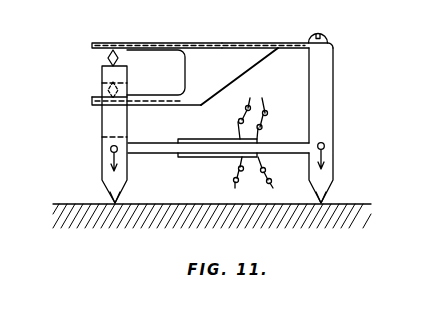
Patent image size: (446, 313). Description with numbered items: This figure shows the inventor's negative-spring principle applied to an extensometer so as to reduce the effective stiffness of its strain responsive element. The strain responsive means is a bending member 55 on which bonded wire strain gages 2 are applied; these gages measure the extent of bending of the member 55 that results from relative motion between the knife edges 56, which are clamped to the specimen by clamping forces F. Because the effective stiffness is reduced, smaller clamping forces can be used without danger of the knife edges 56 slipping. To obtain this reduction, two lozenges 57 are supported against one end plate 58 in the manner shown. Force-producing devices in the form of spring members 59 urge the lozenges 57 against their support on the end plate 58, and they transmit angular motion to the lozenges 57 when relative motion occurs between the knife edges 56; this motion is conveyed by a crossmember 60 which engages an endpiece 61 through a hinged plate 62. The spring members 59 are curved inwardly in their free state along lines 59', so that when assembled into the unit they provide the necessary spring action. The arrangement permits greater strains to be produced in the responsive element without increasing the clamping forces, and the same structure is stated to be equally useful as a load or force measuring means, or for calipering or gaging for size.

The bonded wire strain gages 2 is at (213, 138).
The bending member 55 is at (160, 155).
The knife edges 56 is at (113, 202).
The lozenges 57 is at (108, 59).
The end plate 58 is at (102, 127).
The spring members 59 is at (157, 74).
The lines of inward curvature 59' is at (200, 74).
The crossmember 60 is at (222, 42).
The endpiece 61 is at (336, 88).
The hinged plate 62 is at (292, 42).